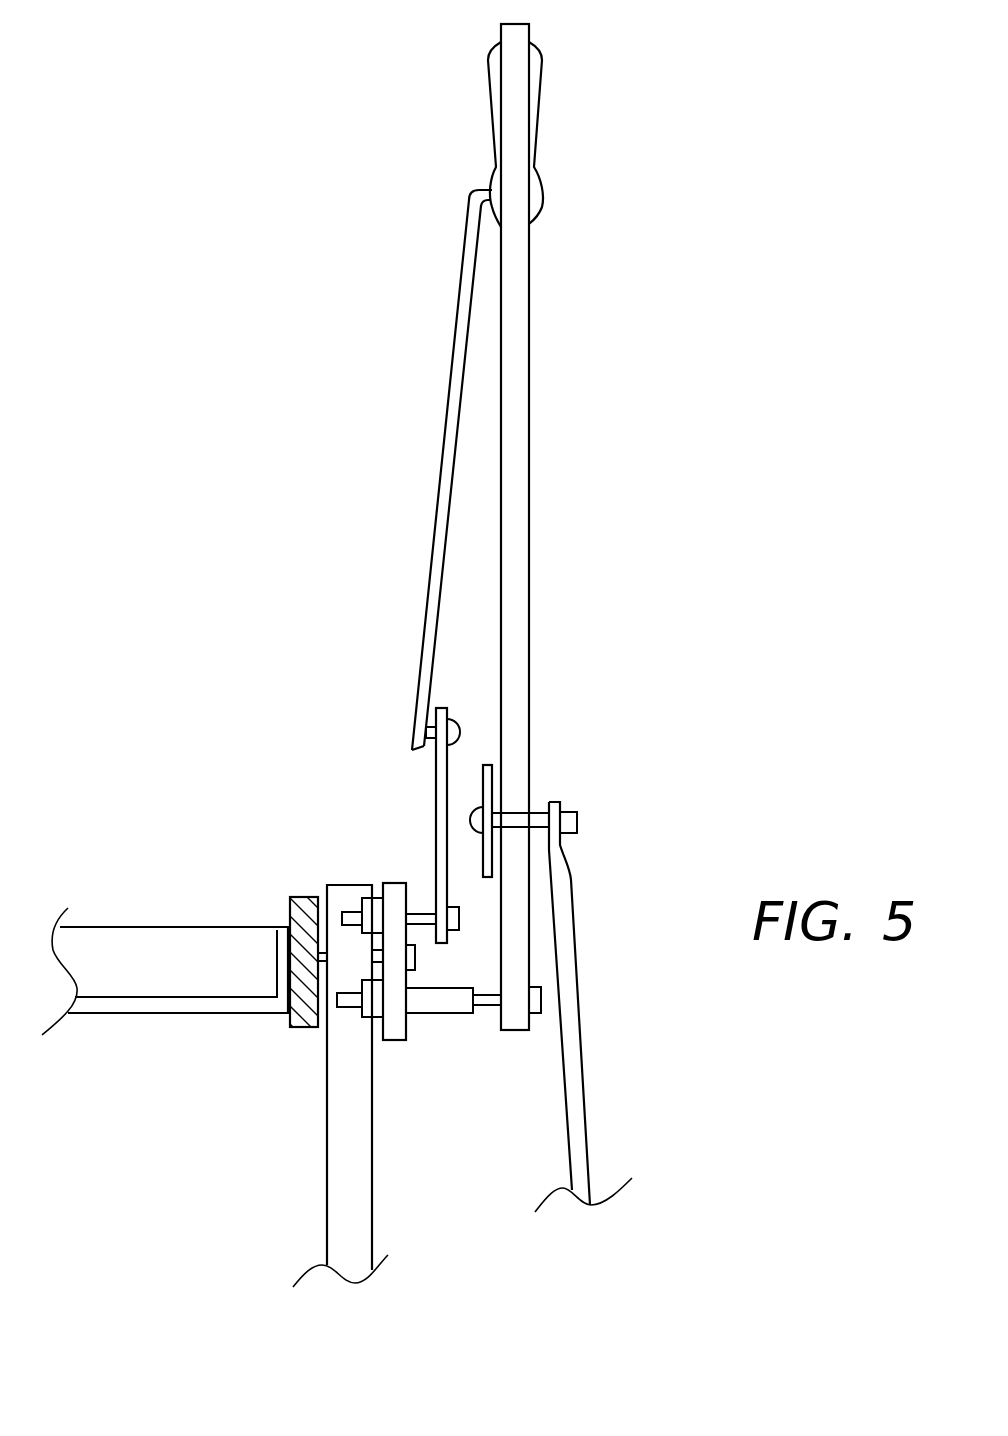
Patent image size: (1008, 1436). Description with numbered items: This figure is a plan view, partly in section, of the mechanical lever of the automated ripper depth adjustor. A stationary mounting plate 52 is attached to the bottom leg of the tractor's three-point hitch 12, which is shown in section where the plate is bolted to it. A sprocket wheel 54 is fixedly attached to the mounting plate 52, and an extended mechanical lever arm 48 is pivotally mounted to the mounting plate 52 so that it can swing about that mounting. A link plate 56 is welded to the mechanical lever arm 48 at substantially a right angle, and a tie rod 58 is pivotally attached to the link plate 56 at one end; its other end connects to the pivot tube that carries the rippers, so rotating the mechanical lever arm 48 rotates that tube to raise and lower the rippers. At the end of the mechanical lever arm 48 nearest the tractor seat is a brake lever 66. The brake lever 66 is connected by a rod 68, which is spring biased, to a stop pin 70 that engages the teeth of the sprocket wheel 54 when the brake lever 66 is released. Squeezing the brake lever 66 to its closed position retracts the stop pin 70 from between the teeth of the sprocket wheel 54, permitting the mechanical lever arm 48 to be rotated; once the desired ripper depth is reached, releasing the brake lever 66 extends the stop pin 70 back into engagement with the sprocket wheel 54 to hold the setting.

The three-point hitch 12 is at (305, 1028).
The mechanical lever arm 48 is at (523, 532).
The mounting plate 52 is at (395, 883).
The sprocket wheel 54 is at (435, 825).
The link plate 56 is at (486, 765).
The tie rod 58 is at (578, 1110).
The brake lever 66 is at (490, 184).
The rod 68 is at (445, 403).
The stop pin 70 is at (428, 752).